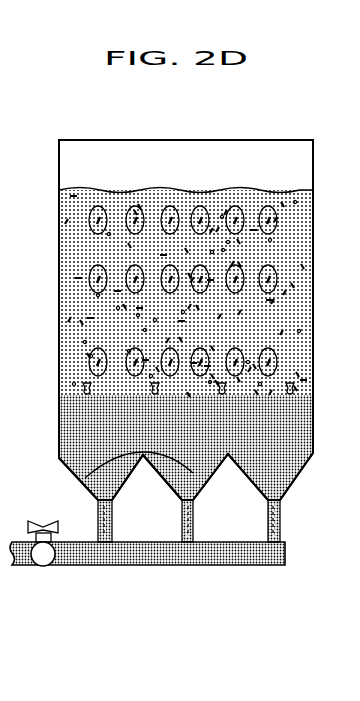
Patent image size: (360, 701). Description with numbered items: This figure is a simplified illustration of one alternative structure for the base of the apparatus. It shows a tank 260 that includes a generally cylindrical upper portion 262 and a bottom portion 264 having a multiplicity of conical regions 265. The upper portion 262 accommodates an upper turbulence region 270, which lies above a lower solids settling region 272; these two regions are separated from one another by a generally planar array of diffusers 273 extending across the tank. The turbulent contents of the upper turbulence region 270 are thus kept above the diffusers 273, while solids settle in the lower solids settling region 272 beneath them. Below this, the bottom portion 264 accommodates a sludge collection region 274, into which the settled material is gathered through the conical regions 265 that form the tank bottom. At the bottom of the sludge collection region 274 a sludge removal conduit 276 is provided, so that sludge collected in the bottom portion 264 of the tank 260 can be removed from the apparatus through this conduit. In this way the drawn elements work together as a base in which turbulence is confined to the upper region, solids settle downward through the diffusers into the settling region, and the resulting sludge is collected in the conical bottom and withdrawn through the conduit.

The tank 260 is at (122, 140).
The upper portion 262 is at (59, 218).
The bottom portion 264 is at (60, 458).
The conical regions 265 is at (212, 478).
The upper turbulence region 270 is at (93, 305).
The lower solids settling region 272 is at (110, 333).
The diffusers 273 is at (150, 392).
The sludge collection region 274 is at (88, 487).
The sludge removal conduit 276 is at (160, 557).